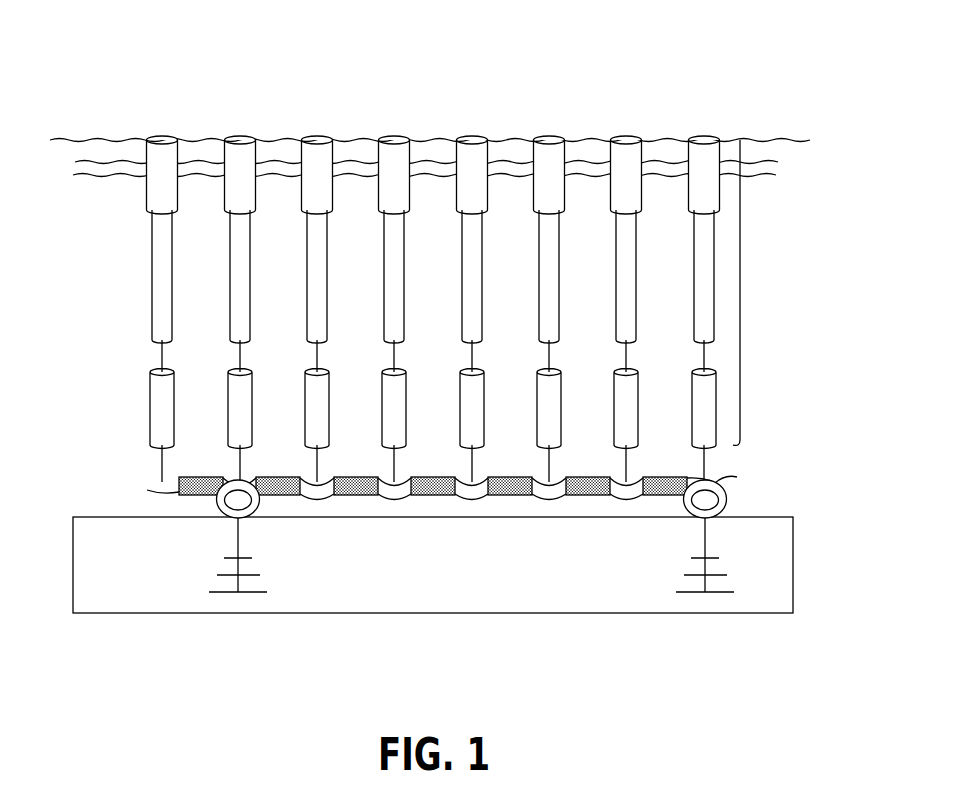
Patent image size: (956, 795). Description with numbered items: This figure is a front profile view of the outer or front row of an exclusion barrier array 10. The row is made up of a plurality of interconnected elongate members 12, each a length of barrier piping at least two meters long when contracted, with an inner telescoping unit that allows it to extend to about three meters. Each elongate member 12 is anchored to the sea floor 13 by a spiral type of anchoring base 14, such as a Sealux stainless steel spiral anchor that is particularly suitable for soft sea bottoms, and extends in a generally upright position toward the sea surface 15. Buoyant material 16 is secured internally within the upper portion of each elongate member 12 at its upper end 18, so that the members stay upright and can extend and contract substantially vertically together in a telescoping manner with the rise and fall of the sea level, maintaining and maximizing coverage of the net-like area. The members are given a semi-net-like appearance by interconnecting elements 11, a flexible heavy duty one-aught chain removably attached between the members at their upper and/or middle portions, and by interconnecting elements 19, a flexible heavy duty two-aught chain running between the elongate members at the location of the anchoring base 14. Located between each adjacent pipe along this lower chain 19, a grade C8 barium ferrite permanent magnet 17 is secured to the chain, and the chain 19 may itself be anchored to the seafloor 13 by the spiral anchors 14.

The exclusion barrier array 10 is at (660, 57).
The interconnecting elements 11 is at (105, 178).
The elongate members 12 is at (740, 290).
The sea floor 13 is at (593, 594).
The anchoring base 14 is at (731, 502).
The sea surface 15 is at (773, 141).
The buoyant material 16 is at (164, 172).
The permanent magnet 17 is at (200, 497).
The upper end 18 is at (233, 135).
The interconnecting elements 19 is at (179, 480).